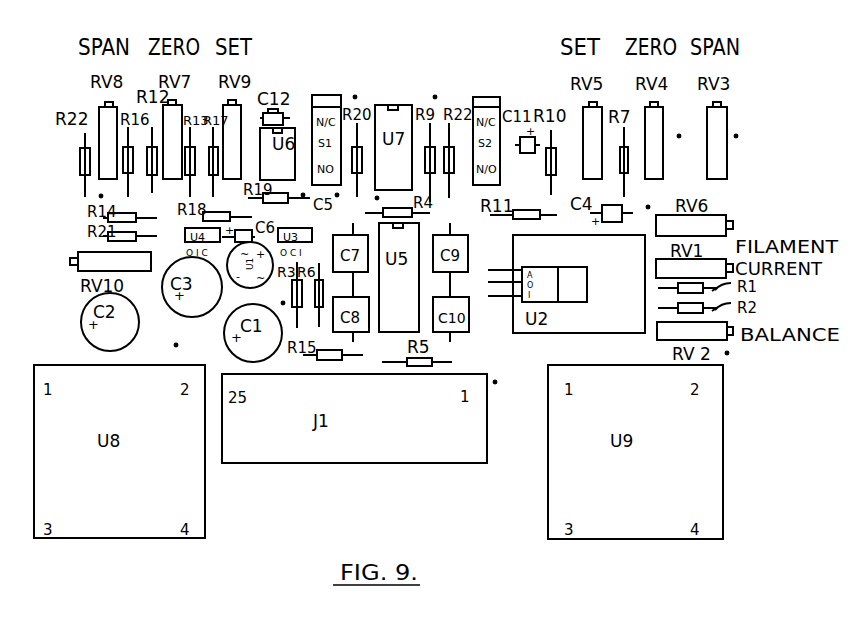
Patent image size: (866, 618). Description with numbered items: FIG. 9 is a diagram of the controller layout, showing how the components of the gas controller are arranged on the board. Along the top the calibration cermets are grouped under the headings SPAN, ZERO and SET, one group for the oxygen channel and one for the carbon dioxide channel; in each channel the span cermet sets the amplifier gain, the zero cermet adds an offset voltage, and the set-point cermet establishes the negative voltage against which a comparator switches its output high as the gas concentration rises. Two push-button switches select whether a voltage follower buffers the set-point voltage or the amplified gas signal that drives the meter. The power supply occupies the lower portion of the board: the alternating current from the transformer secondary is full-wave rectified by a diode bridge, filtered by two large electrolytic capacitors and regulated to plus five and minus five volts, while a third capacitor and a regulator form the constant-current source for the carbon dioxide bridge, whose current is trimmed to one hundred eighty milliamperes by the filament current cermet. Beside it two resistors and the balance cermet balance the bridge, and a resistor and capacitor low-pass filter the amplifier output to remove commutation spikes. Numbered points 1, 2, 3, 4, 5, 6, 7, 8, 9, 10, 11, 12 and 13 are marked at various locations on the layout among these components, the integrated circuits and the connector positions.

The circuit board connection point 1 is at (98, 191).
The circuit board connection point 2 is at (299, 187).
The circuit board connection point 3 is at (360, 94).
The circuit board connection point 4 is at (342, 196).
The circuit board connection point 5 is at (372, 194).
The circuit board connection point 6 is at (440, 94).
The circuit board connection point 7 is at (680, 126).
The circuit board connection point 8 is at (737, 127).
The circuit board connection point 9 is at (653, 204).
The circuit board connection point 10 is at (738, 354).
The circuit board connection point 11 is at (505, 386).
The circuit board connection point 12 is at (281, 295).
The circuit board connection point 13 is at (186, 344).